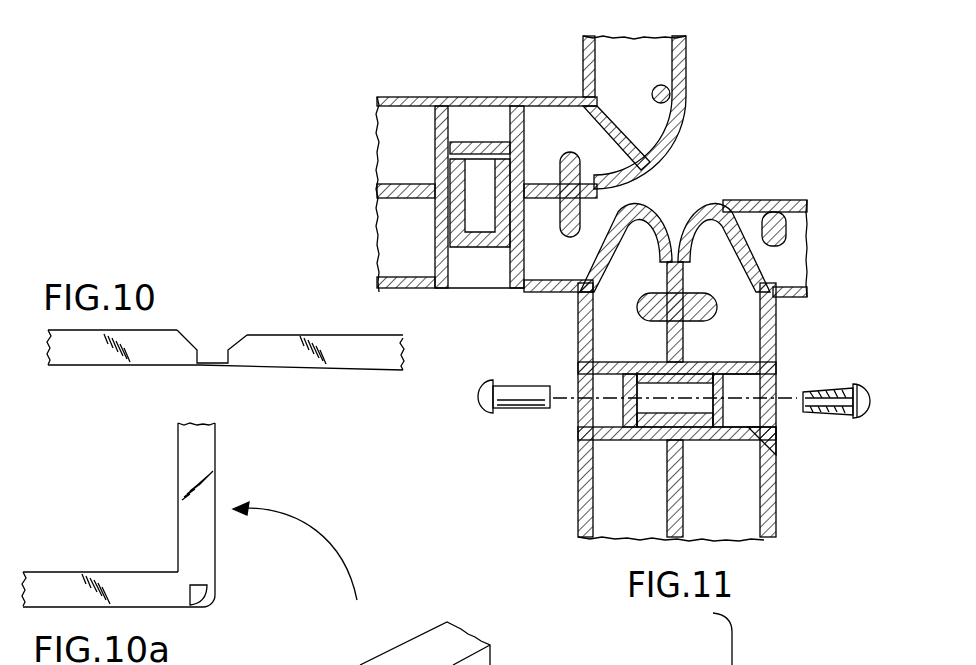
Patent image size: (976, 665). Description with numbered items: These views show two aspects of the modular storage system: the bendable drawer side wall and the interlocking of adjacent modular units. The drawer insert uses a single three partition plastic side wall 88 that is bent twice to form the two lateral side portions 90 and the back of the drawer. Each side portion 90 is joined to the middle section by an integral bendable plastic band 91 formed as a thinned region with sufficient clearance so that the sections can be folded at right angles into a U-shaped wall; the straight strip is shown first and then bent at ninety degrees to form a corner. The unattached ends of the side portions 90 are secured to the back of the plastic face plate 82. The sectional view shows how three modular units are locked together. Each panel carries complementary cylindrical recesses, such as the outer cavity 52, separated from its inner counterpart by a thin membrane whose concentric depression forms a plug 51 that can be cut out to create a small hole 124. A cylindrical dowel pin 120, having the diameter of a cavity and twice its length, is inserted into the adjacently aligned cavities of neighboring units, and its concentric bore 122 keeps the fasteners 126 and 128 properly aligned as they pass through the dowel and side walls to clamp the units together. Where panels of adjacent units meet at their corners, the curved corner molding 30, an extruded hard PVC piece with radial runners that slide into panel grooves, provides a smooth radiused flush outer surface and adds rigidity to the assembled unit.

In FIG. 11, the curved corner molding 30 is at (680, 127).
In FIG. 11, the plug 51 is at (477, 142).
In FIG. 11, the outer cavity 52 is at (477, 270).
In FIG. 10a, the face plate 82 is at (307, 664).
In FIG. 10, the side wall 88 is at (105, 367).
In FIG. 10a, the side wall 88 is at (105, 572).
In FIG. 10, the side portion 90 is at (313, 369).
In FIG. 10a, the side portion 90 is at (215, 535).
In FIG. 10, the bendable plastic band 91 is at (213, 367).
In FIG. 10a, the bendable plastic band 91 is at (210, 603).
In FIG. 11, the dowel pin 120 is at (617, 432).
In FIG. 11, the concentric bore 122 is at (700, 408).
In FIG. 11, the small hole 124 is at (627, 397).
In FIG. 11, the fastener 126 is at (522, 385).
In FIG. 11, the fastener 128 is at (816, 388).